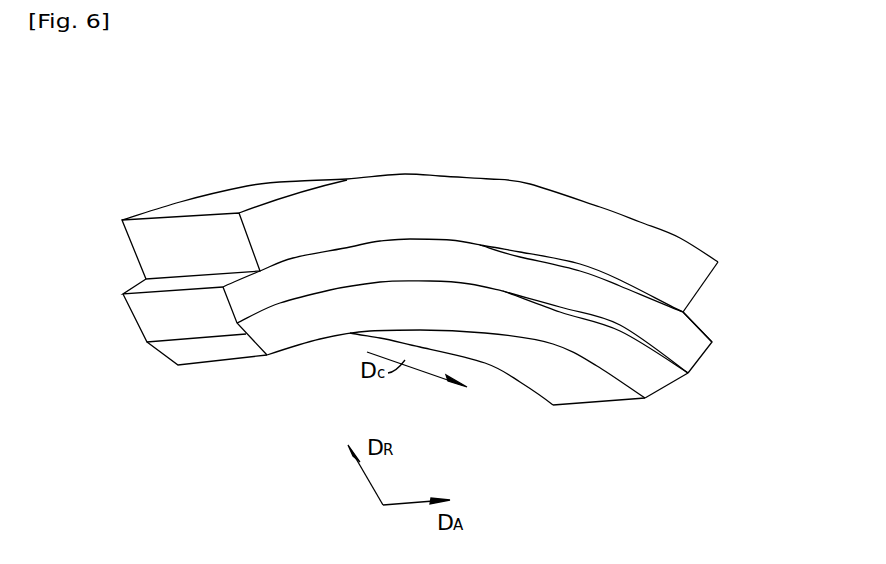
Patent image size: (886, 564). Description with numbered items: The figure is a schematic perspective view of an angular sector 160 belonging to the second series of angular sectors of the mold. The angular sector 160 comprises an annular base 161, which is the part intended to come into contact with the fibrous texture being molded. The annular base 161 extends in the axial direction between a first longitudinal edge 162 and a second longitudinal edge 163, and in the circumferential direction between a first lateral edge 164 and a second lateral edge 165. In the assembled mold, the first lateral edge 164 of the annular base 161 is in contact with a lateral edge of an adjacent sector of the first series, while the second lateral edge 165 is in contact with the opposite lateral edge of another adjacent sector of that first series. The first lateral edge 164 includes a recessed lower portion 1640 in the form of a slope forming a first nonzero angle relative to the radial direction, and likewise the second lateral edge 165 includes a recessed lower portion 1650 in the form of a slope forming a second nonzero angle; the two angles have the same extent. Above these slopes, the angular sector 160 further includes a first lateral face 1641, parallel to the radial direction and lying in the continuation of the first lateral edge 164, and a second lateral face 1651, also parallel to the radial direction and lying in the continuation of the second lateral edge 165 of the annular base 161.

The angular sector 160 is at (465, 168).
The annular base 161 is at (507, 367).
The first longitudinal edge 162 is at (593, 350).
The second longitudinal edge 163 is at (123, 297).
The first lateral edge 164 is at (212, 325).
The recessed lower portion 1640 is at (188, 353).
The first lateral face 1641 is at (160, 300).
The second lateral edge 165 is at (686, 380).
The recessed lower portion 1650 is at (665, 393).
The second lateral face 1651 is at (712, 342).